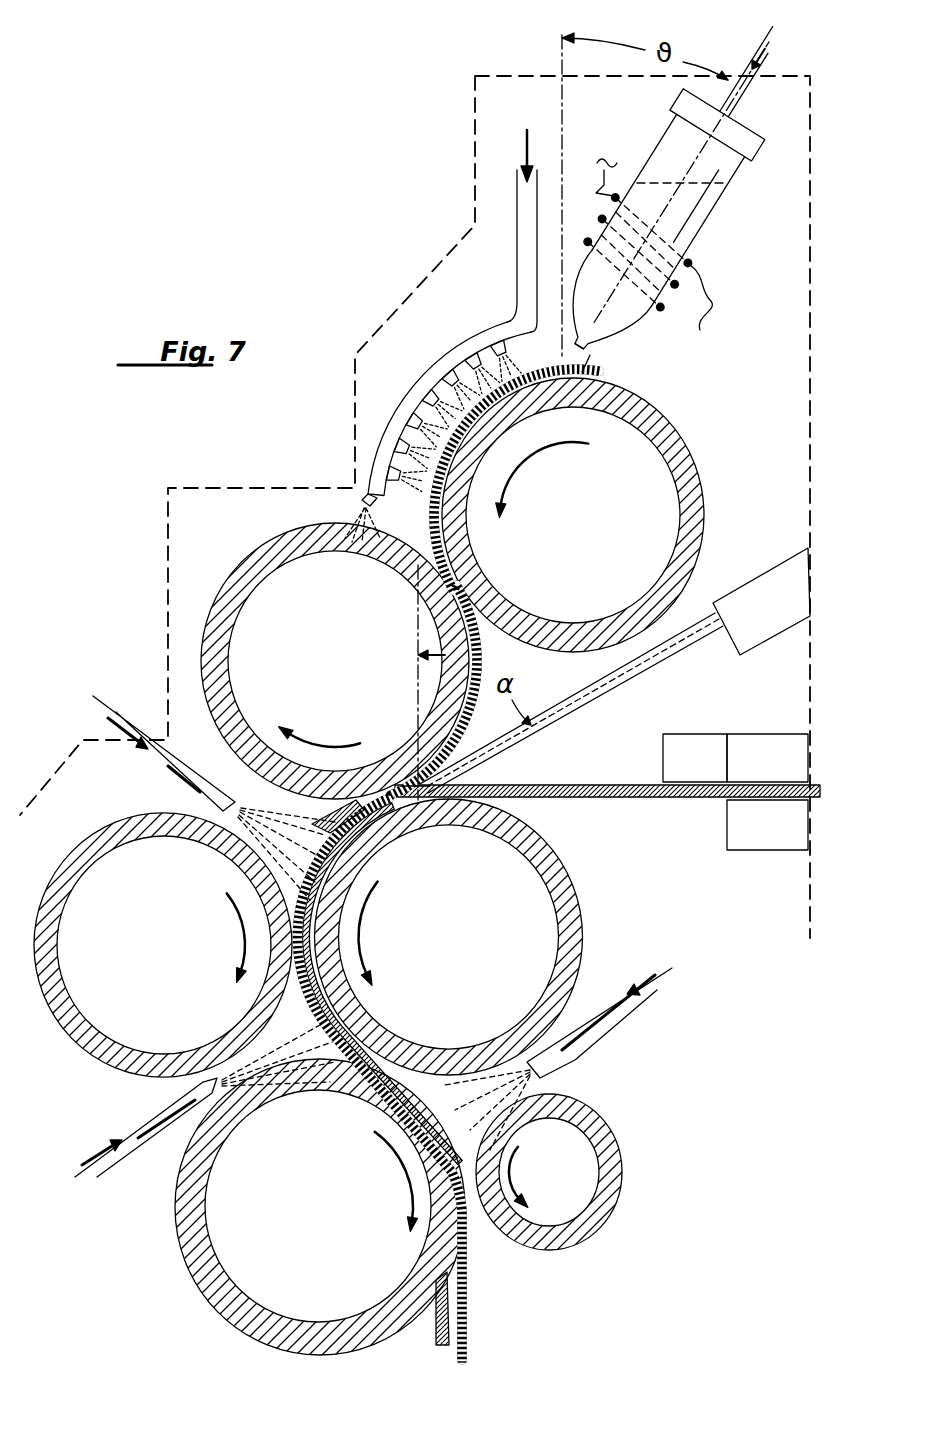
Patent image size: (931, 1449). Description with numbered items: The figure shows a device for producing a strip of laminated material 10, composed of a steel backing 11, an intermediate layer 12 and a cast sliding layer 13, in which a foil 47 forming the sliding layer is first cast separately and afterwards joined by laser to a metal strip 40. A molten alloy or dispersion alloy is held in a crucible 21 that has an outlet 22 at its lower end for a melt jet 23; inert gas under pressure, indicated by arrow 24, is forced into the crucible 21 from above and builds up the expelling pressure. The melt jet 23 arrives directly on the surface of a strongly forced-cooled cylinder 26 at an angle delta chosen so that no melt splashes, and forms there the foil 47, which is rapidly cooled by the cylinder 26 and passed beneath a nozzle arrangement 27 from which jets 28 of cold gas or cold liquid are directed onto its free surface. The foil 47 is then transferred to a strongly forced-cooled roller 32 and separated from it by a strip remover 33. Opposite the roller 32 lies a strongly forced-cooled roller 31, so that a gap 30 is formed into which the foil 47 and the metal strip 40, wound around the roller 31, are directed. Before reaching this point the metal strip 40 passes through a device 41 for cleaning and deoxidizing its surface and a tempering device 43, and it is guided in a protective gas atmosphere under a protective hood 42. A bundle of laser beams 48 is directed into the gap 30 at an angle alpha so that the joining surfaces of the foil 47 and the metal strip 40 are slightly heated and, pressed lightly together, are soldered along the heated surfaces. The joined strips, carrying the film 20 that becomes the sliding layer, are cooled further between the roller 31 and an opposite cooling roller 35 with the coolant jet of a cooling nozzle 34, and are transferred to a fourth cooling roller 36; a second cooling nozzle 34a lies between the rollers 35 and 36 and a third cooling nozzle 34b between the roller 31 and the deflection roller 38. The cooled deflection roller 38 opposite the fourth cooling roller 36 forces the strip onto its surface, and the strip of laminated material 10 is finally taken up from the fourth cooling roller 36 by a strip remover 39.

The laminated material 10 is at (476, 1302).
The steel backing 11 is at (473, 1335).
The intermediate layer 12 is at (473, 1335).
The sliding layer 13 is at (455, 1352).
The film 20 is at (303, 985).
The crucible 21 is at (728, 175).
The outlet 22 is at (600, 347).
The melt jet 23 is at (587, 369).
The arrow 24 is at (762, 38).
The forced-cooled cylinder 26 is at (702, 487).
The nozzle arrangement 27 is at (405, 398).
The jets 28 is at (472, 338).
The gap 30 is at (468, 788).
The cooling roller 31 is at (578, 905).
The forced-cooled roller 32 is at (242, 560).
The strip remover 33 is at (330, 822).
The cooling nozzle 34 is at (210, 785).
The second cooling nozzle 34a is at (210, 1080).
The third cooling nozzle 34b is at (578, 1052).
The third cooling roller 35 is at (62, 866).
The fourth cooling roller 36 is at (220, 1288).
The deflection roller 38 is at (592, 1228).
The strip remover 39 is at (437, 1330).
The metal strip 40 is at (630, 800).
The cleaning and deoxidation device 41 is at (683, 772).
The protective hood 42 is at (475, 112).
The tempering device 43 is at (753, 772).
The foil 47 is at (434, 392).
The bundle of laser beams 48 is at (600, 700).